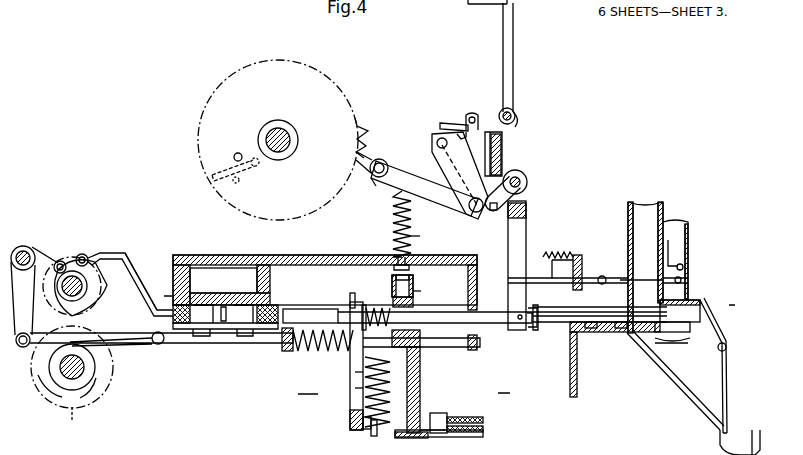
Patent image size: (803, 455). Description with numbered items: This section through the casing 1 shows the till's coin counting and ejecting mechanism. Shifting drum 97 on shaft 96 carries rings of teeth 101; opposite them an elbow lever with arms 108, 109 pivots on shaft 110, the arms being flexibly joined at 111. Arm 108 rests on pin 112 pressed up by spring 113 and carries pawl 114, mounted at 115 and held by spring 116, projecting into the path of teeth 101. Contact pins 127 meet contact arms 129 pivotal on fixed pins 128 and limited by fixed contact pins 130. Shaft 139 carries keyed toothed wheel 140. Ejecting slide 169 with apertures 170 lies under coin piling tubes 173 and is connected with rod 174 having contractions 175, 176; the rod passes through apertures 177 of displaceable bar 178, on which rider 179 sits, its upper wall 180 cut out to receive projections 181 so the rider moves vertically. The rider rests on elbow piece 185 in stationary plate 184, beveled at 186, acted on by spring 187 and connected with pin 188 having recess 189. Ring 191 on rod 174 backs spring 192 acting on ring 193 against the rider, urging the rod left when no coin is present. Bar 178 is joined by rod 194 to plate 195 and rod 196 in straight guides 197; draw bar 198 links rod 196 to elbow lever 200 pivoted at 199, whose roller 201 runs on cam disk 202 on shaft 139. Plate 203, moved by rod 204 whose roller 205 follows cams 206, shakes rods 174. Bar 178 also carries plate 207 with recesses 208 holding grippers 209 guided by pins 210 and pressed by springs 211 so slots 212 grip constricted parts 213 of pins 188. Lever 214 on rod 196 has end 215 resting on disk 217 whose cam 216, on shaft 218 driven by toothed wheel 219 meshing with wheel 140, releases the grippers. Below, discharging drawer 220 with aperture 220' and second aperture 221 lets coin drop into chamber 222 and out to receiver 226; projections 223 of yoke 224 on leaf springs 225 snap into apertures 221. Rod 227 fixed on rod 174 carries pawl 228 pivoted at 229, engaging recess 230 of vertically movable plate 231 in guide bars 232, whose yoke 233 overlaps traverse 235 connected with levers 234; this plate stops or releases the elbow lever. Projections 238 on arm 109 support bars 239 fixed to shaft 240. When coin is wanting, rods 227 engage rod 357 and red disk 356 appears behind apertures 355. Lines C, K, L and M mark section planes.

The casing 1 is at (563, 370).
The shaft 96 is at (281, 128).
The shifting drum 97 is at (333, 63).
The rings of teeth 101 is at (366, 141).
The lower arm of elbow lever 108 is at (430, 199).
The arm of elbow lever 109 is at (430, 166).
The shaft 110 is at (426, 131).
The flexible connection 111 is at (464, 229).
The pin 112 is at (372, 219).
The spring 113 is at (413, 232).
The pawl 114 is at (358, 183).
The pawl pivot 115 is at (378, 195).
The spring 116 is at (383, 162).
The contact pins 127 is at (232, 152).
The fixed pins 128 is at (258, 166).
The contact arms 129 is at (213, 182).
The fixed contact pins 130 is at (238, 183).
The shaft 139 is at (61, 290).
The toothed wheel 140 is at (88, 314).
The coin ejecting slide 169 is at (556, 336).
The apertures 170 is at (622, 300).
The coin piling tubes 173 is at (621, 218).
The rod 174 is at (493, 326).
The annular contraction 175 is at (428, 336).
The annular contraction 176 is at (327, 302).
The apertures 177 is at (450, 312).
The bars 178 is at (421, 400).
The riders 179 is at (430, 294).
The upper transverse wall 180 is at (414, 278).
The projections 181 is at (386, 280).
The stationary plate 184 is at (334, 419).
The elbow pieces 185 is at (331, 375).
The beveled ends 186 is at (392, 365).
The spring 187 is at (336, 392).
The pin 188 is at (303, 409).
The annular recess 189 is at (333, 437).
The ring 191 is at (327, 251).
The spring 192 is at (366, 308).
The ring 193 is at (322, 359).
The rod 194 is at (467, 351).
The plates 195 is at (280, 363).
The rods 196 is at (177, 346).
The straight guides 197 is at (215, 350).
The draw bar 198 is at (28, 347).
The pivot 199 is at (30, 250).
The elbow lever 200 is at (34, 291).
The roller 201 is at (62, 261).
The cam disk 202 is at (108, 256).
The plates 203 is at (270, 331).
The rod 204 is at (133, 268).
The roller 205 is at (86, 256).
The cams 206 is at (102, 298).
The plates 207 is at (445, 420).
The recesses 208 is at (460, 400).
The grippers 209 is at (455, 436).
The pins 210 is at (484, 430).
The springs 211 is at (484, 418).
The slot 212 is at (405, 443).
The constricted parts 213 is at (387, 420).
The lever 214 is at (146, 345).
The lever end 215 is at (109, 373).
The cam 216 is at (67, 392).
The disk 217 is at (52, 389).
The shaft 218 is at (84, 392).
The toothed wheel 219 is at (82, 429).
The discharging slide 220 is at (615, 348).
The aperture 220' is at (605, 342).
The second aperture 221 is at (680, 312).
The chamber 222 is at (678, 403).
The projections 223 is at (712, 321).
The yoke 224 is at (688, 333).
The leaf springs 225 is at (672, 350).
The receiver 226 is at (708, 440).
The rod 227 is at (527, 229).
The pawl 228 is at (524, 186).
The pivot 229 is at (527, 178).
The recess 230 is at (494, 211).
The vertically movable plate 231 is at (503, 143).
The guide bars 232 is at (503, 160).
The yoke 233 is at (515, 113).
The levers 234 is at (470, 12).
The traverse 235 is at (513, 49).
The projections 238 is at (471, 144).
The bars 239 is at (447, 120).
The shaft 240 is at (470, 106).
The apertures 355 is at (688, 262).
The red disk 356 is at (672, 254).
The rod 357 is at (586, 276).
The section line C— C is at (449, 300).
The section line K— K is at (351, 365).
The section line L— L is at (389, 310).
The section line M— M is at (402, 394).